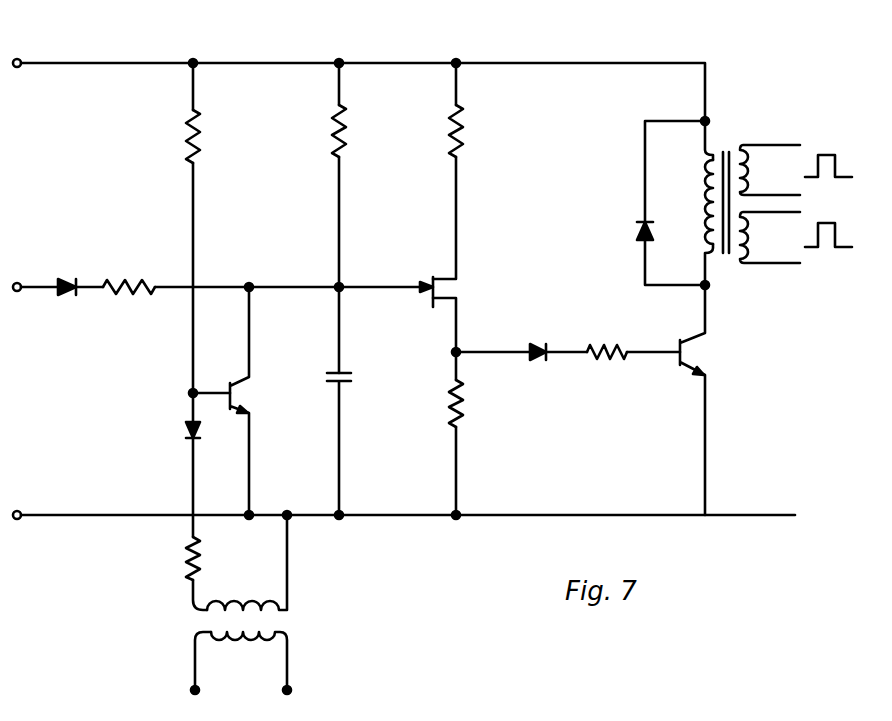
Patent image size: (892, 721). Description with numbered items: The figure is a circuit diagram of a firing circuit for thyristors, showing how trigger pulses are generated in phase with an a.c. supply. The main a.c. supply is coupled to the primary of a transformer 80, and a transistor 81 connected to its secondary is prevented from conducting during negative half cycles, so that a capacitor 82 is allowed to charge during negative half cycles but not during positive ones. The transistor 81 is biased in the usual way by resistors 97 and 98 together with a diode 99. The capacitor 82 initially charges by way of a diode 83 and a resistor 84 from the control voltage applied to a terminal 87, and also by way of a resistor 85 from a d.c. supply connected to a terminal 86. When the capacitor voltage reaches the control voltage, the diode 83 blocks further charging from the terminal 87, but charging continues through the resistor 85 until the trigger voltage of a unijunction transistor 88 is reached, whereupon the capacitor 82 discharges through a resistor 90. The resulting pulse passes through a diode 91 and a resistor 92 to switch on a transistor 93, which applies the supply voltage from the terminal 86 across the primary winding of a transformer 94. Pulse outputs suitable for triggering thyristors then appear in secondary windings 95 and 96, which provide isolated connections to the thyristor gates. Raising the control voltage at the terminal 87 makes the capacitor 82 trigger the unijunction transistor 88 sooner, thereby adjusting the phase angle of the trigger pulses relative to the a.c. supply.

The transformer 80 is at (280, 622).
The transistor 81 is at (230, 383).
The capacitor 82 is at (345, 372).
The diode 83 is at (70, 297).
The resistor 84 is at (130, 297).
The resistor 85 is at (346, 120).
The terminal 86 is at (27, 54).
The terminal 87 is at (27, 278).
The unijunction transistor 88 is at (433, 277).
The resistor 90 is at (449, 410).
The diode 91 is at (540, 361).
The resistor 92 is at (606, 360).
The transistor 93 is at (680, 364).
The transformer 94 is at (726, 146).
The secondary winding 95 is at (745, 168).
The secondary winding 96 is at (750, 258).
The resistor 97 is at (200, 128).
The resistor 98 is at (184, 552).
The diode 99 is at (185, 432).